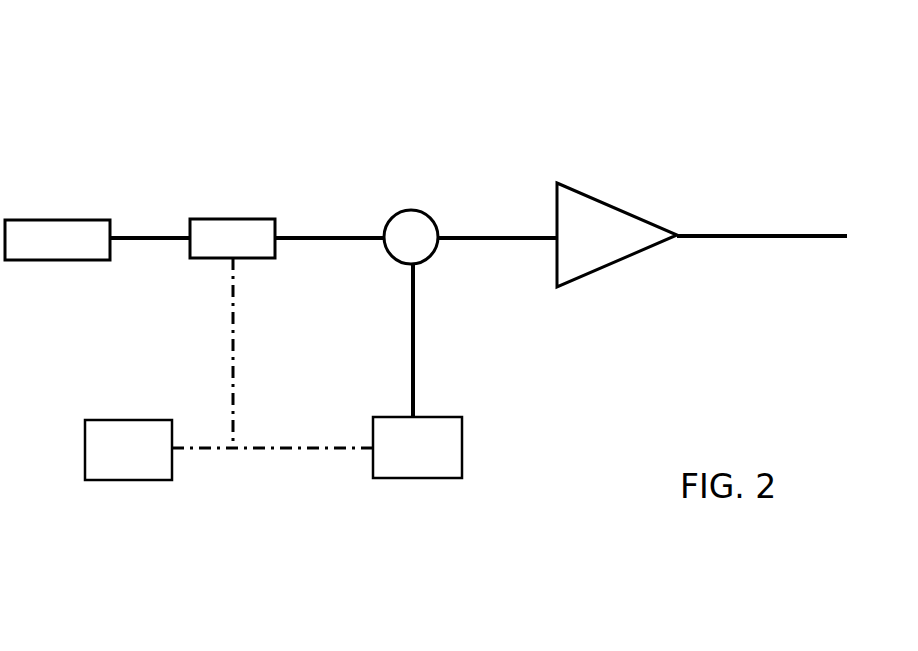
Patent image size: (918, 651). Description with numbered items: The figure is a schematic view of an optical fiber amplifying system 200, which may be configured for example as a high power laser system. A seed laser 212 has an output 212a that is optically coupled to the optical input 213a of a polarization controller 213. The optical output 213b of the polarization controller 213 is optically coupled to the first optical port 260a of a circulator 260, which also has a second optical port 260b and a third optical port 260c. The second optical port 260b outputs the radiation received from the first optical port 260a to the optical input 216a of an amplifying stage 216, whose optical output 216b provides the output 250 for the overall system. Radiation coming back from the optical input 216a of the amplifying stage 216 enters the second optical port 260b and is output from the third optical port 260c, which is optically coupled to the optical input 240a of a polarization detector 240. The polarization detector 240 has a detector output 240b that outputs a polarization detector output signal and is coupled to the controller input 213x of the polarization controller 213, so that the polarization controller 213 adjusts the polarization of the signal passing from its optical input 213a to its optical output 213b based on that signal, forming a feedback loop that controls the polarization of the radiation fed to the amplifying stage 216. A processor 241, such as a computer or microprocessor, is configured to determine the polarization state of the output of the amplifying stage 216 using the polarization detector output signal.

The optical fiber amplifying system 200 is at (212, 92).
The seed laser 212 is at (57, 240).
The output 212a is at (125, 227).
The polarization controller 213 is at (232, 238).
The optical input 213a is at (182, 215).
The optical output 213b is at (288, 217).
The controller input 213x is at (218, 272).
The amplifying stage 216 is at (617, 235).
The optical input 216a is at (547, 213).
The optical output 216b is at (683, 215).
The polarization detector 240 is at (417, 447).
The optical input 240a is at (427, 405).
The detector output 240b is at (365, 460).
The processor 241 is at (128, 450).
The output 250 is at (771, 230).
The circulator 260 is at (422, 208).
The first optical port 260a is at (380, 212).
The second optical port 260b is at (450, 253).
The third optical port 260c is at (398, 275).